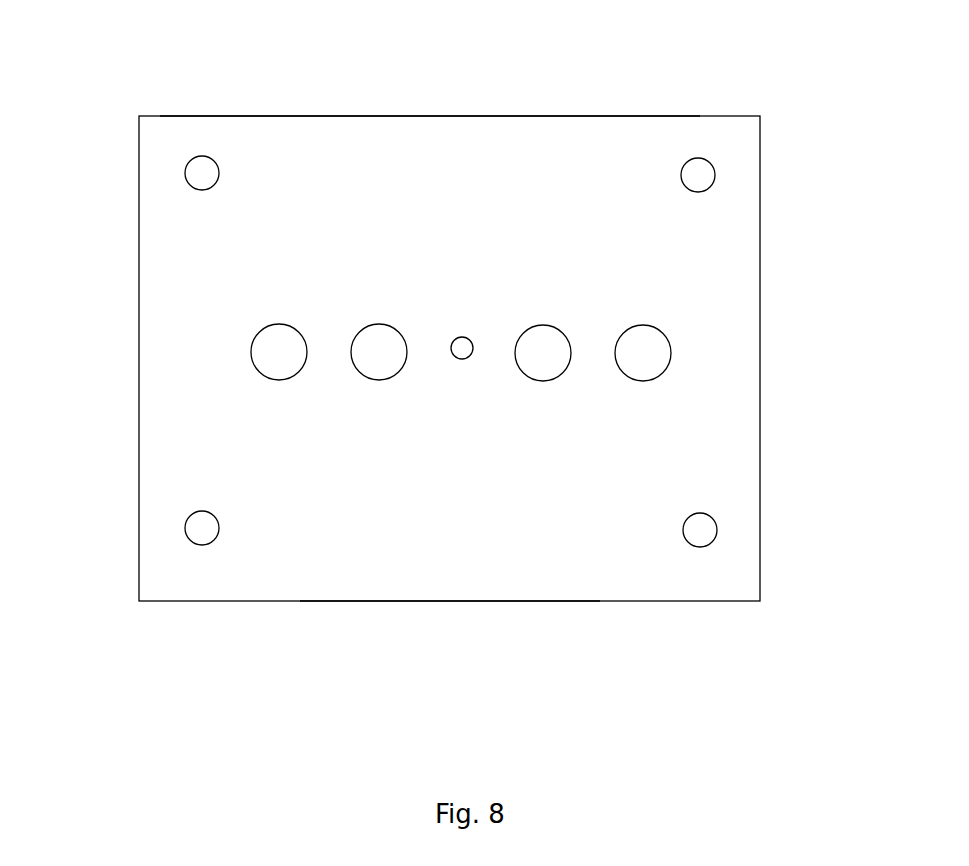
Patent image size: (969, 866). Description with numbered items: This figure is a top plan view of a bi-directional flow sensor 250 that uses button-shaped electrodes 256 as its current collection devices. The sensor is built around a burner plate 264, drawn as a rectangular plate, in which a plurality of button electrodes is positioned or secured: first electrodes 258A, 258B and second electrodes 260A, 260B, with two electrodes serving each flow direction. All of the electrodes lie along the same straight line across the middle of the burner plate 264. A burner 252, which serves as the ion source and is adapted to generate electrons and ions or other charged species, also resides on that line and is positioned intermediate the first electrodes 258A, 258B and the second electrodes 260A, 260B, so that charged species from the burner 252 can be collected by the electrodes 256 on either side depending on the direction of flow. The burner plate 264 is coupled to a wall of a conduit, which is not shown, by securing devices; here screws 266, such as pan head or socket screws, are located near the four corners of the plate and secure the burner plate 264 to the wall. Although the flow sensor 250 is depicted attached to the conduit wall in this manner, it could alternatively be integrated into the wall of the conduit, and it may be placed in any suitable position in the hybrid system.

The bi-directional flow sensor 250 is at (592, 101).
The burner 252 is at (463, 337).
The button-shaped electrodes 256 is at (385, 281).
The first electrode 258A is at (352, 361).
The first electrode 258B is at (516, 362).
The second electrode 260A is at (252, 361).
The second electrode 260B is at (616, 362).
The burner plate 264 is at (430, 580).
The screws 266 is at (193, 175).